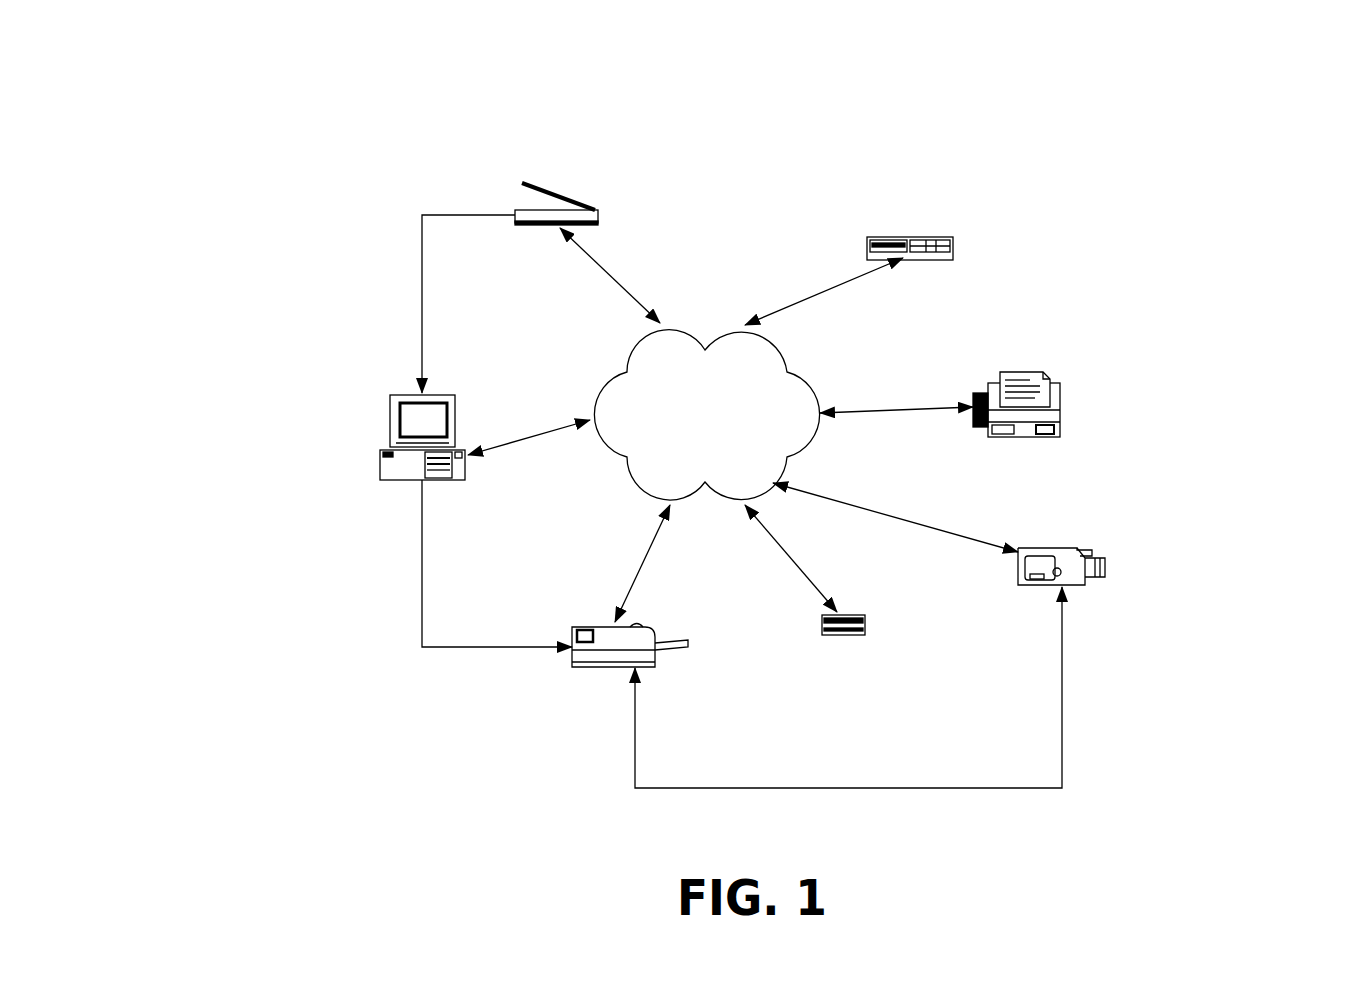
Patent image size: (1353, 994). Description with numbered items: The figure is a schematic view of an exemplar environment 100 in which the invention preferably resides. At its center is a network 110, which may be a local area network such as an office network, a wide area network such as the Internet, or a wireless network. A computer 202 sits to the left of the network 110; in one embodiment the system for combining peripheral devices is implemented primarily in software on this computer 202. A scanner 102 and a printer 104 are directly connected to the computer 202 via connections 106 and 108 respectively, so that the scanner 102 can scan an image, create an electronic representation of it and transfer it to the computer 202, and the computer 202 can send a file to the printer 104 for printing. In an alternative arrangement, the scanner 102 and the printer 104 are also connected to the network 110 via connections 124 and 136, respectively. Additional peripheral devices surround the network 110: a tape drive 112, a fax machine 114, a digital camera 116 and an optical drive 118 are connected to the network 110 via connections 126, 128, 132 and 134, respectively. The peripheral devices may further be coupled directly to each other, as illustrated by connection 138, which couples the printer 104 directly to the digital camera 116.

The environment 100 is at (306, 55).
The scanner 102 is at (598, 215).
The printer 104 is at (612, 668).
The connection 106 is at (422, 247).
The connection 108 is at (422, 542).
The network 110 is at (683, 462).
The tape drive 112 is at (868, 248).
The fax machine 114 is at (1063, 403).
The digital camera 116 is at (1107, 562).
The optical drive 118 is at (865, 623).
The connection 124 is at (598, 268).
The connection 126 is at (823, 297).
The connection 128 is at (868, 408).
The connection 132 is at (877, 510).
The connection 134 is at (788, 557).
The connection 136 is at (640, 563).
The connection 138 is at (887, 790).
The computer 202 is at (380, 457).